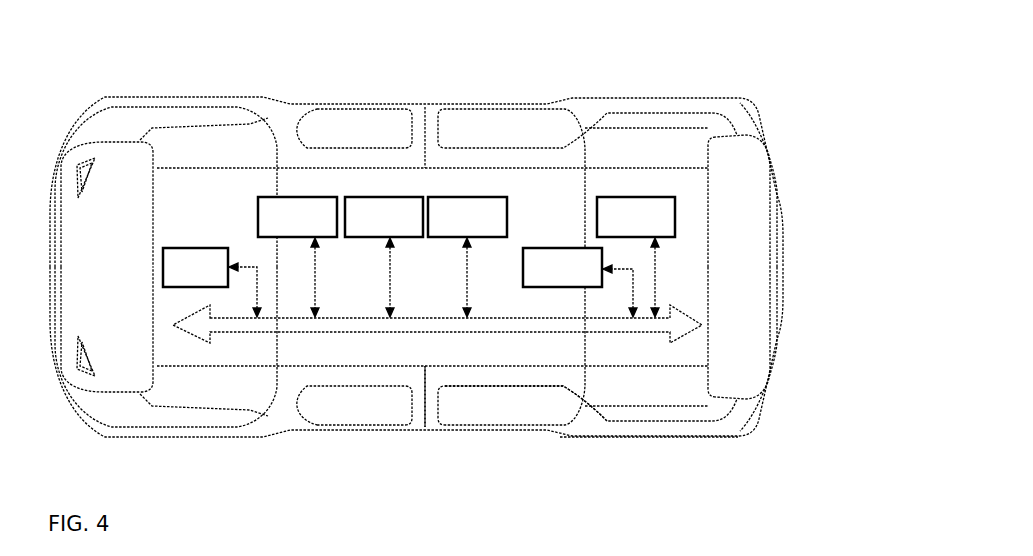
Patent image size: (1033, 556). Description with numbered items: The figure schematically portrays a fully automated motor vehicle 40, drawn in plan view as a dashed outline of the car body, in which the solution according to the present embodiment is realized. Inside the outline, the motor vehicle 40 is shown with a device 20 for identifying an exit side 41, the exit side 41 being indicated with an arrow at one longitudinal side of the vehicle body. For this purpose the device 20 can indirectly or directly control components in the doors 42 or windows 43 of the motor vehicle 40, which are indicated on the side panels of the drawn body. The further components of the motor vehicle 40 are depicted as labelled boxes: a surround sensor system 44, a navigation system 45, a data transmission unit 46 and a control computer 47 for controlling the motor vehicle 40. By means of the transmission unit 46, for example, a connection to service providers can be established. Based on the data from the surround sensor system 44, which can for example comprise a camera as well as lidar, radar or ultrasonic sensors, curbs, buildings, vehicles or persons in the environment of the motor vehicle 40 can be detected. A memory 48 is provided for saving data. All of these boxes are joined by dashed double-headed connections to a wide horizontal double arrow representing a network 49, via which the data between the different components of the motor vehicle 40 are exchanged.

The motor vehicle 40 is at (649, 97).
The exit side 41 is at (636, 450).
The doors 42 is at (432, 418).
The windows 43 is at (520, 409).
The surround sensor system 44 is at (577, 247).
The navigation system 45 is at (390, 197).
The data transmission unit 46 is at (317, 197).
The control computer 47 is at (675, 218).
The memory 48 is at (207, 247).
The network 49 is at (378, 333).
The device 20 is at (463, 197).